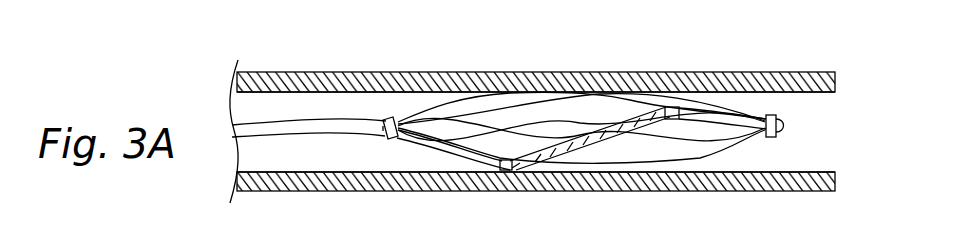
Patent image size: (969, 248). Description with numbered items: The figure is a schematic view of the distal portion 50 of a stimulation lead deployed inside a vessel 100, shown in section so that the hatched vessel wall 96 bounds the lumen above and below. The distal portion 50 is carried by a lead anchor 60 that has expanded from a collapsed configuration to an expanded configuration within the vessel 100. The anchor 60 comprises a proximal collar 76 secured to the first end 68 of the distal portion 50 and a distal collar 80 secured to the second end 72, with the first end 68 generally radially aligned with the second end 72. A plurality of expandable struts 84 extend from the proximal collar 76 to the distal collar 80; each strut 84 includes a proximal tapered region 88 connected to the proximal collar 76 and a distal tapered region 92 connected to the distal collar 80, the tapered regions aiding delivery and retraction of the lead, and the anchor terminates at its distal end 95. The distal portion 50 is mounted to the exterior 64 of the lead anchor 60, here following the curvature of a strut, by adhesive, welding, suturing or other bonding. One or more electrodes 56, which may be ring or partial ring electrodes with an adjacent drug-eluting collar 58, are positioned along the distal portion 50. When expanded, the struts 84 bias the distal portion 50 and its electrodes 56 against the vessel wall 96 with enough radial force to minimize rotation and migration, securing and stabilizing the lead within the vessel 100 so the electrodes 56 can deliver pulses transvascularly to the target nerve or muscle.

The vessel 100 is at (327, 71).
The vessel wall 96 is at (812, 93).
The distal portion 50 is at (310, 137).
The first end 68 is at (400, 118).
The proximal collar 76 is at (386, 137).
The lead anchor 60 is at (566, 93).
The expandable strut 84 is at (622, 100).
The exterior 64 is at (596, 164).
The distal tapered region 92 is at (725, 148).
The proximal tapered region 88 is at (428, 155).
The drug-eluting collar 58 is at (508, 170).
The electrode 56 is at (518, 168).
The distal end 95 is at (703, 105).
The second end 72 is at (759, 117).
The distal collar 80 is at (776, 135).